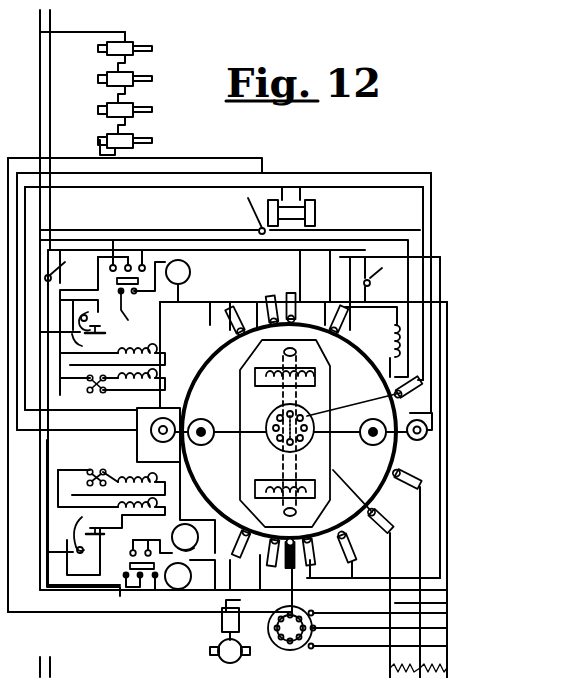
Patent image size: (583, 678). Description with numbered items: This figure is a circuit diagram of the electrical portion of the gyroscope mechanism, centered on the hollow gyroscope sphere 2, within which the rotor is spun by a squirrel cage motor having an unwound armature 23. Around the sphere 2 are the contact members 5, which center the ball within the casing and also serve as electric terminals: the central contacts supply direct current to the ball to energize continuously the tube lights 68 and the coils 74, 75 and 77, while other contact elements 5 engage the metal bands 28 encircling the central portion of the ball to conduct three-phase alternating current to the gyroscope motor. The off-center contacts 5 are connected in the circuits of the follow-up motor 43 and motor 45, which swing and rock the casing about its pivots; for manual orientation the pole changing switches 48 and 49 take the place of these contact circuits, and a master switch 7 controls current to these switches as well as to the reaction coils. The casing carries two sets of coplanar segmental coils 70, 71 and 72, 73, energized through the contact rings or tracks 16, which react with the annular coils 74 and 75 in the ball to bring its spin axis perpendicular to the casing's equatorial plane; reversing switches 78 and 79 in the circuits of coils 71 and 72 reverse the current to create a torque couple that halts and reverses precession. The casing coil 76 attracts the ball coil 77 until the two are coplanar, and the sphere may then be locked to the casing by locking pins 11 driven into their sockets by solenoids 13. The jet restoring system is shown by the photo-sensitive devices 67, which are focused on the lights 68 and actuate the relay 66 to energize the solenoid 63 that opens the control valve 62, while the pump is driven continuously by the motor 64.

The gyroscope sphere 2 is at (188, 428).
The contact members 5 is at (226, 318).
The master switch 7 is at (63, 268).
The locking pins 11 is at (142, 80).
The solenoids 13 is at (108, 80).
The contact rings or tracks 16 is at (90, 432).
The unwound armature 23 is at (308, 422).
The metal bands 28 is at (390, 398).
The motor 43 is at (190, 272).
The motor 45 is at (180, 585).
The pole changing switch 48 is at (131, 297).
The pole changing switch 49 is at (140, 560).
The control valve 62 is at (220, 646).
The solenoid 63 is at (220, 615).
The motor 64 is at (298, 612).
The relay 66 is at (314, 214).
The photo-sensitive devices 67 is at (168, 442).
The tube lights 68 is at (202, 444).
The segmental coil 70 is at (140, 350).
The segmental coil 71 is at (128, 388).
The segmental coil 72 is at (126, 476).
The segmental coil 73 is at (140, 527).
The annular coil 74 is at (318, 374).
The annular coil 75 is at (272, 482).
The coil 76 is at (393, 336).
The coil 77 is at (283, 352).
The reversing switch 78 is at (88, 392).
The reversing switch 79 is at (88, 468).